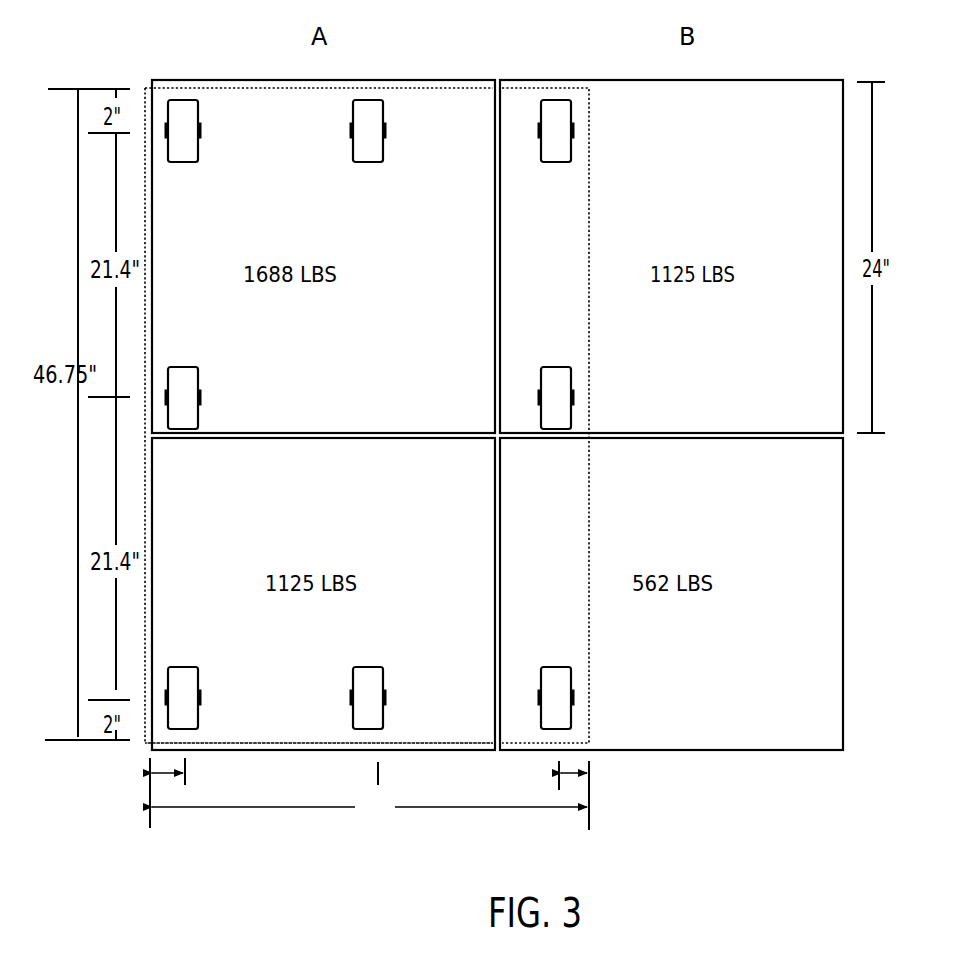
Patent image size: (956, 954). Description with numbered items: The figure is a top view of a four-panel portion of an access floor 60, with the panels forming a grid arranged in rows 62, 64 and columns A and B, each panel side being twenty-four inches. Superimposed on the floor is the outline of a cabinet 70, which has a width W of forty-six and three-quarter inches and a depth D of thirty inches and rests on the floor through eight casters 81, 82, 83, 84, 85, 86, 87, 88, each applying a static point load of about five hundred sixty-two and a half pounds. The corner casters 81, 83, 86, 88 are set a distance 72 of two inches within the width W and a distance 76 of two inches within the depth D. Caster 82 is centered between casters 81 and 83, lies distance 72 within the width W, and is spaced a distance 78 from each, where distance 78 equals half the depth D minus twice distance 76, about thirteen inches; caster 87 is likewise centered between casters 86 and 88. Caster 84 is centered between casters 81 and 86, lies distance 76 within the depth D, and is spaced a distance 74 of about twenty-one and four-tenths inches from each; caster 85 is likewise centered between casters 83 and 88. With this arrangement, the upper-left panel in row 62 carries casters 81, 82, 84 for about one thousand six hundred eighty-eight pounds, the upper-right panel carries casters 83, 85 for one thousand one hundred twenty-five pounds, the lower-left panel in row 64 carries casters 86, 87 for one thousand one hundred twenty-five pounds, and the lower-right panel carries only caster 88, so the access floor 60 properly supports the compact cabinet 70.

The access floor 60 is at (188, 79).
The cabinet 70 is at (457, 88).
The row 62 is at (82, 414).
The row 64 is at (86, 414).
The distance 72 is at (98, 733).
The distance 74 is at (105, 577).
The distance 76 is at (172, 778).
The distance 78 is at (253, 773).
The corner caster 81 is at (190, 163).
The caster 82 is at (375, 163).
The corner caster 83 is at (560, 163).
The caster 84 is at (185, 367).
The caster 85 is at (560, 367).
The corner caster 86 is at (185, 667).
The caster 87 is at (373, 667).
The corner caster 88 is at (558, 667).
The width W is at (72, 388).
The depth D is at (362, 817).